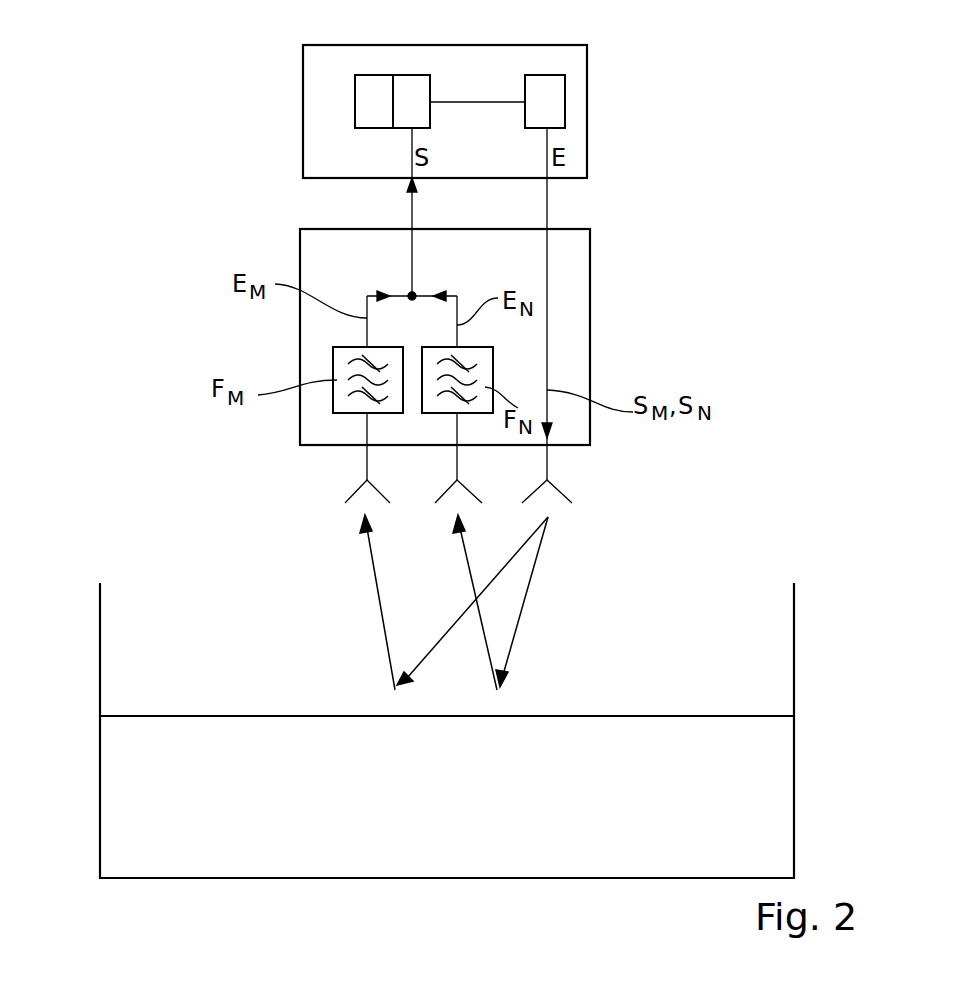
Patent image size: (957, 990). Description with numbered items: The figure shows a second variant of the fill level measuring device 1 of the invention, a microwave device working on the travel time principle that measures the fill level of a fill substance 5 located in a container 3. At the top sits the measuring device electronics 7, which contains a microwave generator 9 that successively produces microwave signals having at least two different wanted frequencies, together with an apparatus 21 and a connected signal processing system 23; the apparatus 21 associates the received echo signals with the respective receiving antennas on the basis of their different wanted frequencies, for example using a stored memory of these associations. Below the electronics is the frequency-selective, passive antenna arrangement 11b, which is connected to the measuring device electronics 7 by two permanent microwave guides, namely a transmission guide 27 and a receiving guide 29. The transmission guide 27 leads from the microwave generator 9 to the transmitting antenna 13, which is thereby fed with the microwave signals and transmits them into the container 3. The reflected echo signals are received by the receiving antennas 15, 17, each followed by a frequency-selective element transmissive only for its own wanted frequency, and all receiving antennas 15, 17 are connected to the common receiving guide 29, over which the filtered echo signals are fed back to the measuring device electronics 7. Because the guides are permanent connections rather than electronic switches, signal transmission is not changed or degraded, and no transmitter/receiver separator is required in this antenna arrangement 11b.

The fill level measuring device 1 is at (132, 76).
The container 3 is at (100, 636).
The fill substance 5 is at (456, 810).
The measuring device electronics 7 is at (312, 75).
The microwave generator 9 is at (553, 120).
The antenna arrangement 11b is at (575, 246).
The transmitting antenna 13 is at (557, 485).
The receiving antenna 15 is at (350, 492).
The receiving antenna 17 is at (445, 492).
The apparatus 21 is at (388, 120).
The signal processing system 23 is at (425, 120).
The transmission guide 27 is at (547, 207).
The receiving guide 29 is at (412, 215).